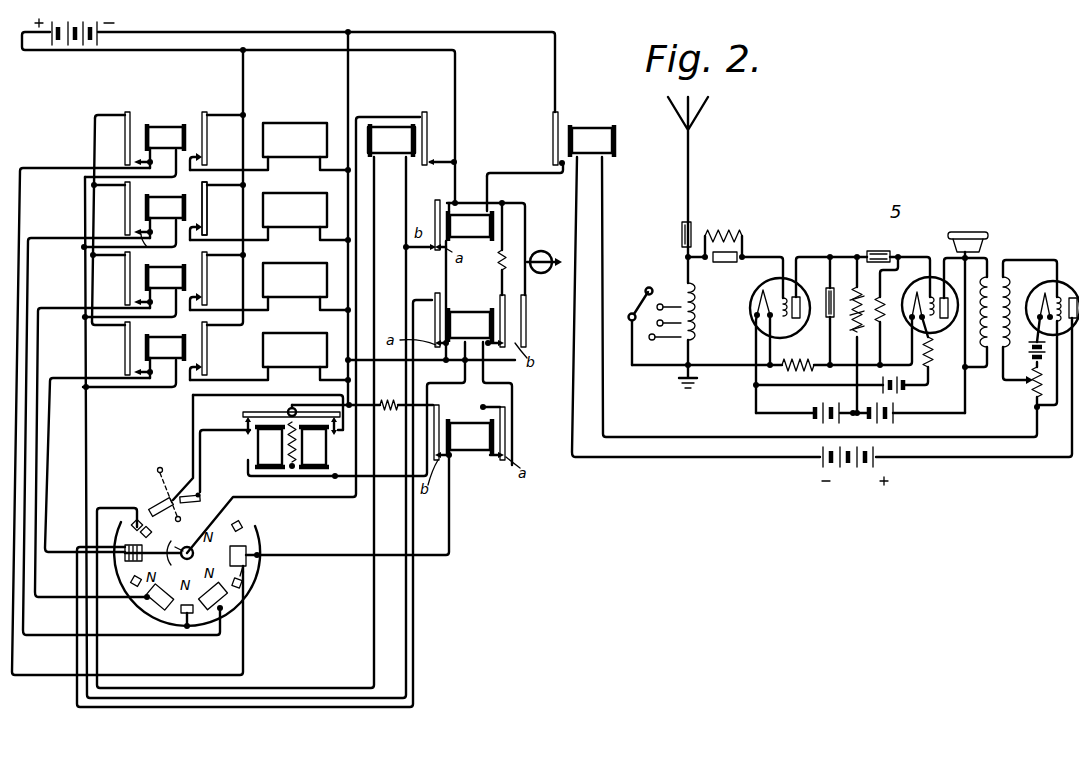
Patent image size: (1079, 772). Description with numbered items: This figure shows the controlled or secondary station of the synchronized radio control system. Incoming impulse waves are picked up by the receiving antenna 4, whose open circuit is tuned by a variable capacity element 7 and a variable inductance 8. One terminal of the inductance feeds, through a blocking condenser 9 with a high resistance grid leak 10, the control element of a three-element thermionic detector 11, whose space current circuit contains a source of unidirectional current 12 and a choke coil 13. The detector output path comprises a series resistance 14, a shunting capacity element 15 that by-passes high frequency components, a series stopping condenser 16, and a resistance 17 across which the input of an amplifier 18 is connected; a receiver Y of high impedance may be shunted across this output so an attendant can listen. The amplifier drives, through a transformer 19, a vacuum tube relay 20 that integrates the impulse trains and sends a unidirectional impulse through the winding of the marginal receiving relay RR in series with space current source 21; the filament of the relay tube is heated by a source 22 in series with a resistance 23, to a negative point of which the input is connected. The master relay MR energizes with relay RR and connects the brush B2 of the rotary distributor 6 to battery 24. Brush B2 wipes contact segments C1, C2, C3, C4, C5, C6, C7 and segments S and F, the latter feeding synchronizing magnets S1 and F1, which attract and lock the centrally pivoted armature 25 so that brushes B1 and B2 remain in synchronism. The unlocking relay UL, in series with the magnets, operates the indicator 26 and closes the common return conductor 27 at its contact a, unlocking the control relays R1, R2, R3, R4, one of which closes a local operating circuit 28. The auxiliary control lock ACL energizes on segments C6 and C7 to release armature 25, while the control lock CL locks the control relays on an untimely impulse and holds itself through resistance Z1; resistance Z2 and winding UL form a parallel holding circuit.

The receiving antenna 4 is at (690, 161).
The rotary distributor 6 is at (267, 394).
The variable capacity element 7 is at (690, 236).
The variable inductance 8 is at (696, 302).
The blocking condenser 9 is at (725, 263).
The high resistance grid leak 10 is at (729, 234).
The thermionic detector 11 is at (802, 320).
The source of unidirectional current 12 is at (812, 410).
The choke coil 13 is at (853, 338).
The series resistance 14 is at (802, 362).
The shunting capacity element 15 is at (827, 300).
The series stopping condenser 16 is at (882, 245).
The resistance 17 is at (884, 326).
The amplifier 18 is at (936, 338).
The transformer 19 is at (997, 280).
The vacuum tube relay 20 is at (1040, 290).
The space current source 21 is at (862, 472).
The filament heating source 22 is at (1033, 360).
The resistance 23 is at (1030, 394).
The common source 24 is at (96, 20).
The armature 25 is at (246, 413).
The indicator 26 is at (545, 252).
The common return conductor 27 is at (80, 708).
The local operating circuit 28 is at (231, 236).
The control relay R1 is at (146, 137).
The control relay R2 is at (146, 207).
The control relay R3 is at (146, 277).
The control relay R4 is at (146, 347).
The auxiliary control lock ACL is at (412, 138).
The master relay MR is at (464, 268).
The unlocking relay UL is at (437, 380).
The control lock CL is at (381, 480).
The receiving relay RR is at (591, 124).
The synchronizing magnet S1 is at (262, 447).
The synchronizing magnet F1 is at (308, 447).
The resistance Z1 is at (380, 403).
The resistance Z2 is at (499, 262).
The contact segment C1 is at (249, 560).
The contact segment C2 is at (224, 613).
The contact segment C3 is at (150, 605).
The contact C4 is at (132, 581).
The contact C5 is at (133, 553).
The contact segment C6 is at (134, 521).
The contact segment C7 is at (183, 550).
The distributor brush B1 is at (187, 617).
The brush B2 is at (182, 500).
The contact segment F is at (154, 503).
The contact segment S is at (201, 498).
The receiver Y is at (973, 232).
The armature contact a is at (147, 248).